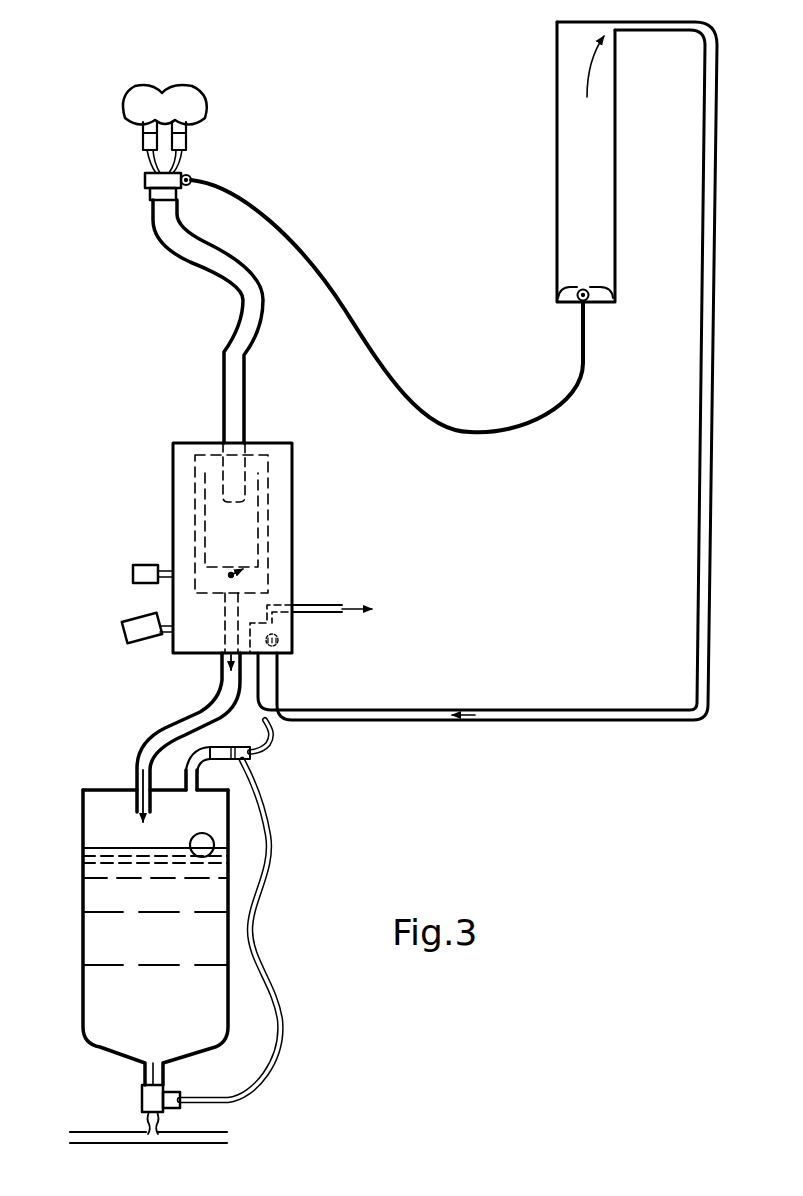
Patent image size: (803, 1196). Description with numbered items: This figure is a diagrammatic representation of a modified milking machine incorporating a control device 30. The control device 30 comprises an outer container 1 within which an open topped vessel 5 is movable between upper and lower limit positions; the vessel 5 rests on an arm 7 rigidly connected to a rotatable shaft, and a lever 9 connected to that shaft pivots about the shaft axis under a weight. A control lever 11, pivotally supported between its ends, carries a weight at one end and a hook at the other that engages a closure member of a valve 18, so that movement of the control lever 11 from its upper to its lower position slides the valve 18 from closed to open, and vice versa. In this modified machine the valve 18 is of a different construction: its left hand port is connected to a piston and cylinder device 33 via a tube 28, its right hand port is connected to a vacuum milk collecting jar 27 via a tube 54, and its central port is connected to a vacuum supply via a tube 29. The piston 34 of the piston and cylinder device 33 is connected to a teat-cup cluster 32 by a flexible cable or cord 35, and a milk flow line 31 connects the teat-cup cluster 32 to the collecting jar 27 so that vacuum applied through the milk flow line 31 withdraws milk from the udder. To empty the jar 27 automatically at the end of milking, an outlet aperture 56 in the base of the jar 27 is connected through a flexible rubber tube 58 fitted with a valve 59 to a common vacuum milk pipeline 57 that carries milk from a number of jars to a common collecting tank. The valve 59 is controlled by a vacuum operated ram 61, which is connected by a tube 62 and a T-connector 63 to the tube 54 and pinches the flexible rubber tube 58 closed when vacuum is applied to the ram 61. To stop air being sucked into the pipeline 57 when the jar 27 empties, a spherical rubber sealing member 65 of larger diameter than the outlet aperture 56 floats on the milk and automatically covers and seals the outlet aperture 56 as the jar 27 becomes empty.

The outer container 1 is at (270, 470).
The open topped vessel 5 is at (262, 496).
The arm 7 is at (246, 573).
The lever 9 is at (165, 566).
The control lever 11 is at (160, 626).
The valve 18 is at (280, 625).
The vacuum milk collecting jar 27 is at (229, 852).
The tube 28 is at (357, 710).
The tube 29 is at (330, 605).
The control device 30 is at (171, 460).
The milk flow line 31 is at (224, 357).
The teat-cup cluster 32 is at (185, 171).
The piston and cylinder device 33 is at (554, 99).
The piston 34 is at (567, 287).
The flexible cable or cord 35 is at (360, 350).
The tube 54 is at (276, 742).
The outlet aperture 56 is at (153, 1062).
The common vacuum milk pipeline 57 is at (228, 1143).
The flexible rubber tube 58 is at (161, 1078).
The valve 59 is at (141, 1098).
The vacuum operated ram 61 is at (181, 1108).
The tube 62 is at (253, 914).
The T-connector 63 is at (247, 747).
The spherical rubber sealing member 65 is at (210, 834).